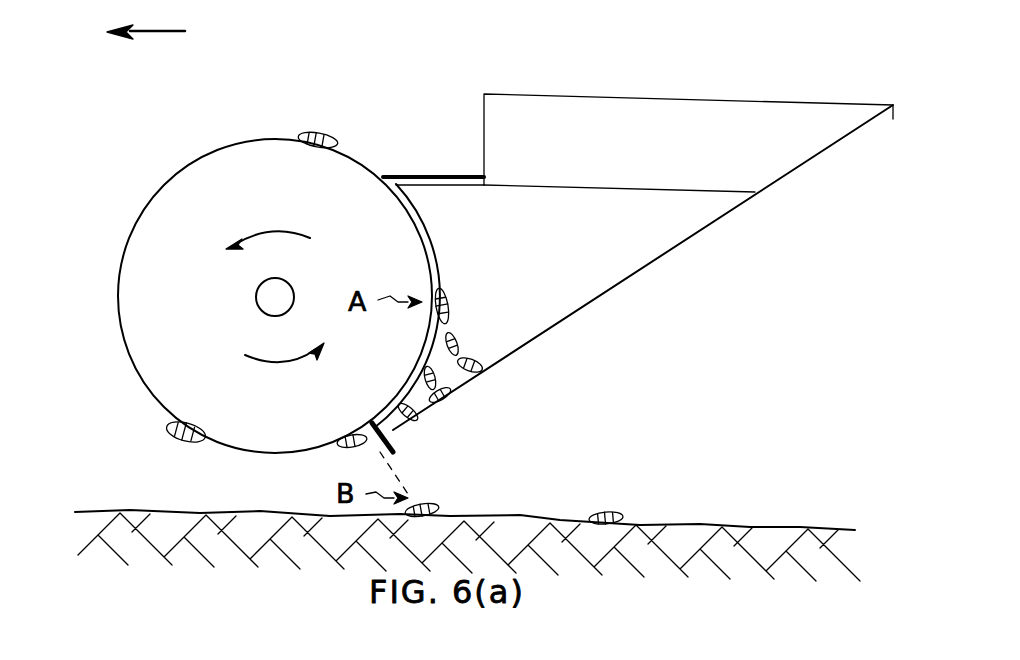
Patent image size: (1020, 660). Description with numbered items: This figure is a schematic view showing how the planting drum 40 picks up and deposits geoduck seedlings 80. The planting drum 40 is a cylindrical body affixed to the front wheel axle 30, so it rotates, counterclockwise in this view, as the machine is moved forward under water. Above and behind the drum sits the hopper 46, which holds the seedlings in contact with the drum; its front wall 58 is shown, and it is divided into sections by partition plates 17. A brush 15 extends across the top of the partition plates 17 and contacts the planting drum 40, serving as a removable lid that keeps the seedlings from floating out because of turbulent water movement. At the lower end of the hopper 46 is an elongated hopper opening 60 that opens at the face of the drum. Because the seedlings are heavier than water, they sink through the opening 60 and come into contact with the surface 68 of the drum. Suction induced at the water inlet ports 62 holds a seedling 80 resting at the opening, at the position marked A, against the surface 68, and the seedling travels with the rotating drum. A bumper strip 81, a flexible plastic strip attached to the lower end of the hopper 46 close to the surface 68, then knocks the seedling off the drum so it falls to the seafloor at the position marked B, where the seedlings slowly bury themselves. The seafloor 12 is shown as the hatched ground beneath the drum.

The ground surface 12 is at (248, 573).
The brush 15 is at (428, 176).
The partition plates 17 is at (598, 188).
The front wheel axle 30 is at (258, 298).
The planting drum 40 is at (214, 160).
The hopper 46 is at (654, 242).
The front wall 58 is at (484, 112).
The hopper opening 60 is at (437, 241).
The water inlet ports 62 is at (310, 143).
The surface of the planting drum 68 is at (141, 206).
The geoduck seedlings 80 is at (322, 131).
The bumper strip 81 is at (398, 440).